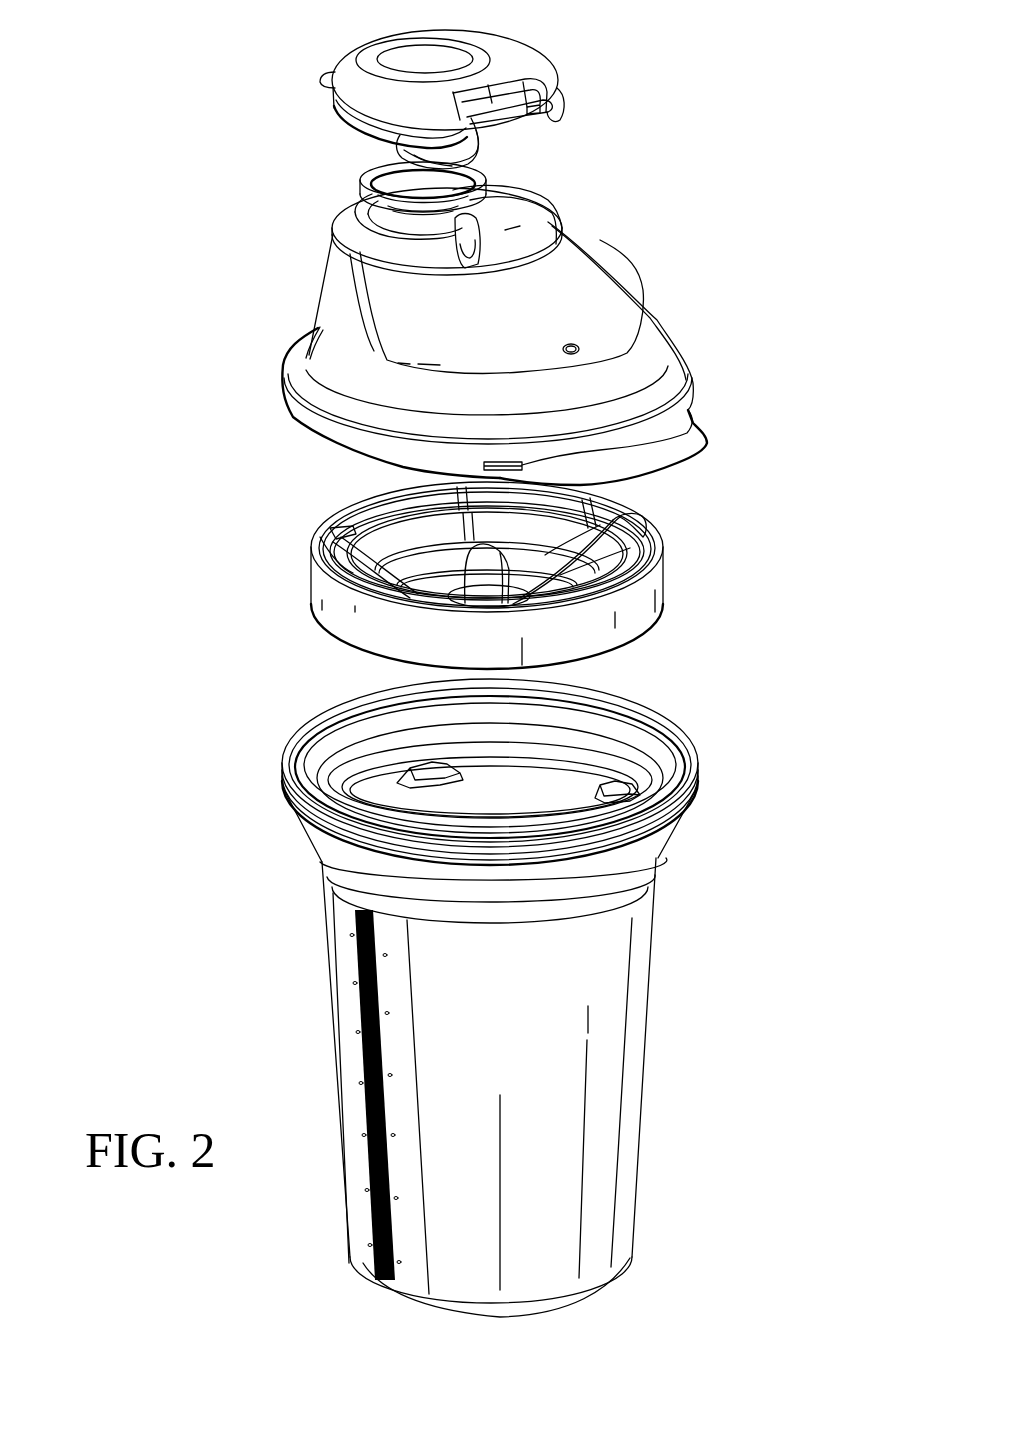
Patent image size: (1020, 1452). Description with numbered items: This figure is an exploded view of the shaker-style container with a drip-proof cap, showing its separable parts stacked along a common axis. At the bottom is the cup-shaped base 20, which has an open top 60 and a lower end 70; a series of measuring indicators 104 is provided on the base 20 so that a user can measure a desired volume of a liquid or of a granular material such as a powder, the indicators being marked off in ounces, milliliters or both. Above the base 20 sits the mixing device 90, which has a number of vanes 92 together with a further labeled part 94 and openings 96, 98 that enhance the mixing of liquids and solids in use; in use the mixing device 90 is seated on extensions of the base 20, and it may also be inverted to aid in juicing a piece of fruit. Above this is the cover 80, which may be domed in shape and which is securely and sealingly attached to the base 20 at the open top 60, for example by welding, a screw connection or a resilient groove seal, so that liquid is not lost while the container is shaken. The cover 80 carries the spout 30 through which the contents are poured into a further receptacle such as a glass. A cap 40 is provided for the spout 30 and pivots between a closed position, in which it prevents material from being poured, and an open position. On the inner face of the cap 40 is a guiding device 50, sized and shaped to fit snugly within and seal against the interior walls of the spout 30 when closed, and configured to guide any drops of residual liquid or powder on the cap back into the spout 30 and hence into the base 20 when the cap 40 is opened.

The cup-shaped base 20 is at (615, 995).
The spout 30 is at (355, 182).
The cap 40 is at (352, 55).
The guiding device 50 is at (492, 153).
The open top 60 is at (365, 757).
The lower end 70 is at (412, 1305).
The cover 80 is at (645, 286).
The mixing device 90 is at (667, 604).
The vanes 92 is at (330, 532).
The rib 94 is at (580, 531).
The opening 96 is at (597, 571).
The opening 98 is at (404, 538).
The measuring indicators 104 is at (335, 966).